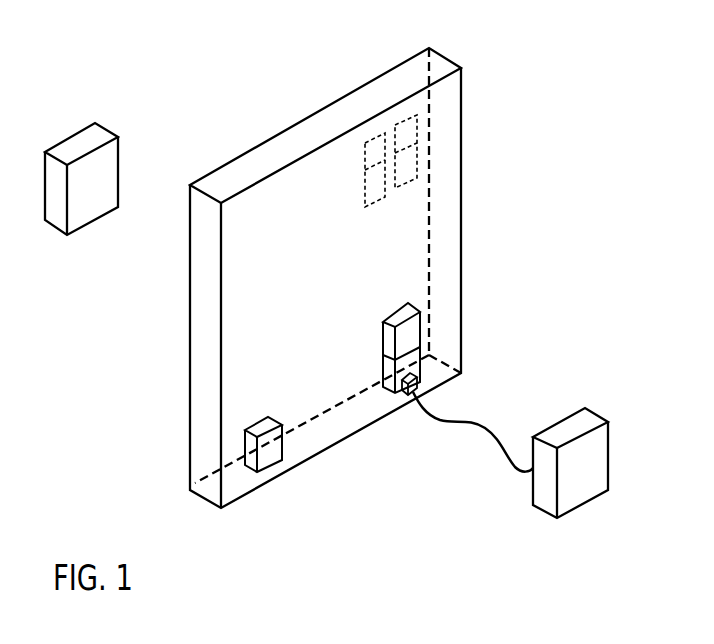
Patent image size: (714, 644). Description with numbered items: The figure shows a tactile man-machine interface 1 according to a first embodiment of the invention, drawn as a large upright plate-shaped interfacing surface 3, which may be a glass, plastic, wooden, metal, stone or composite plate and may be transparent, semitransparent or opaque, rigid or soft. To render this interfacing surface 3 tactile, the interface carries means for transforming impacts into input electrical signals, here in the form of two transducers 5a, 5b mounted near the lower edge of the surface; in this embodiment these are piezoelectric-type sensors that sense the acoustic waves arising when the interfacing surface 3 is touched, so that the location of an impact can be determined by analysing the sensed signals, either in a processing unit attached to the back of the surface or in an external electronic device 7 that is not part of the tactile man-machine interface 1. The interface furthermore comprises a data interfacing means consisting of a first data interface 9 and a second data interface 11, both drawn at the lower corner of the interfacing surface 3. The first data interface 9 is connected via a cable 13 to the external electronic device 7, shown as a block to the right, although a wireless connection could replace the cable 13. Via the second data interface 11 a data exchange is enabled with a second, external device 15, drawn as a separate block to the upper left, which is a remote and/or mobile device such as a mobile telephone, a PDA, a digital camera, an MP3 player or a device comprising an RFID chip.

The tactile man-machine interface 1 is at (295, 58).
The interfacing surface 3 is at (202, 345).
The transducer 5a is at (267, 460).
The transducer 5b is at (450, 375).
The external electronic device 7 is at (588, 420).
The first data interface 9 is at (410, 396).
The second data interface 11 is at (418, 330).
The cable 13 is at (497, 450).
The second external device 15 is at (98, 137).